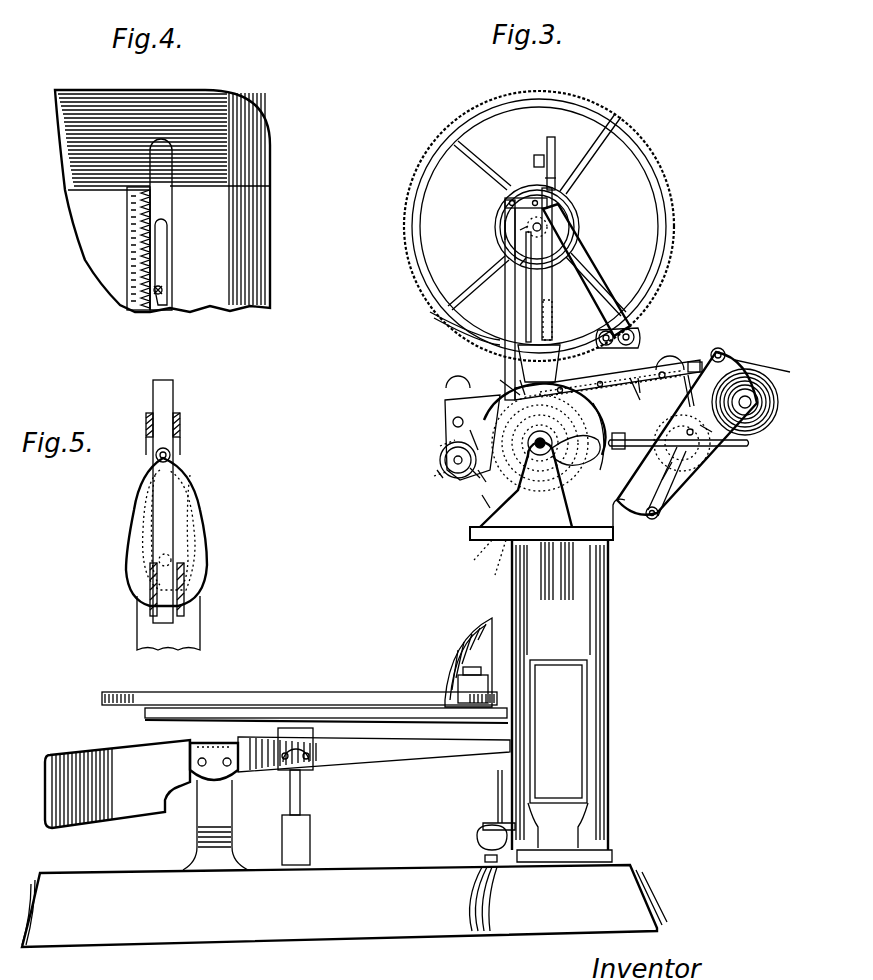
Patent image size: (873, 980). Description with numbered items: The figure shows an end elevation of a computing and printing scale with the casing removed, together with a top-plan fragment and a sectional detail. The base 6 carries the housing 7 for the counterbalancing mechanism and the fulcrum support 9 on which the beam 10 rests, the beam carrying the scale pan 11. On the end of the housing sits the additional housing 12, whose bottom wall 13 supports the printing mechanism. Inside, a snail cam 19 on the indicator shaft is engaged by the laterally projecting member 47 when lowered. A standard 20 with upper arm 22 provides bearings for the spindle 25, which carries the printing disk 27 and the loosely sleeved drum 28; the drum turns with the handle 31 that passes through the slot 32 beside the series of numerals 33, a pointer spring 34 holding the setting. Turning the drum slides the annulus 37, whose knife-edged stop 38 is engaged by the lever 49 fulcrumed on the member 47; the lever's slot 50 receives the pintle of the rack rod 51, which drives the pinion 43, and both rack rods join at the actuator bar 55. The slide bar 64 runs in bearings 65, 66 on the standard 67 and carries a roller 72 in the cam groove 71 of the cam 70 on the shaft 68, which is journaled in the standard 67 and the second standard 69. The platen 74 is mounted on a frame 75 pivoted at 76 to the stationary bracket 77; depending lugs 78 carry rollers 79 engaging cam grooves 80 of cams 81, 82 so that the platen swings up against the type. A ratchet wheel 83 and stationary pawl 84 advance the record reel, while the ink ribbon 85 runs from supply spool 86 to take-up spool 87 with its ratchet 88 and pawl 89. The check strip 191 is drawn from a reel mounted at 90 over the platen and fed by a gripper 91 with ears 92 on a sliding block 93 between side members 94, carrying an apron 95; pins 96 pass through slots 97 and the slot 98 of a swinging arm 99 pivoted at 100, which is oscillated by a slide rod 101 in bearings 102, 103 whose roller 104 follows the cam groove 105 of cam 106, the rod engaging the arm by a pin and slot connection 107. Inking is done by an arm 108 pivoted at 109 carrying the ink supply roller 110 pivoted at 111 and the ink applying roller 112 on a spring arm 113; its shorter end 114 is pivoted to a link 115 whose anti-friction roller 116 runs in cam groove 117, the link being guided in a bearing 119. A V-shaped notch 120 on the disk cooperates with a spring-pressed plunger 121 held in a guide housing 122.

In FIG. 3, the base 6 is at (388, 940).
In FIG. 3, the housing 7 is at (612, 758).
In FIG. 3, the fulcrum support 9 is at (236, 842).
In FIG. 3, the beam 10 is at (405, 760).
In FIG. 3, the scale pan 11 is at (326, 691).
In FIG. 4, the additional housing 12 is at (208, 92).
In FIG. 3, the additional housing 12 is at (612, 120).
In FIG. 3, the floor or bottom wall 13 is at (576, 571).
In FIG. 3, the snail cam 19 is at (506, 192).
In FIG. 3, the standard 20 is at (506, 360).
In FIG. 3, the upper end of standard 22 is at (526, 274).
In FIG. 3, the spindle 25 is at (527, 228).
In FIG. 3, the printing disk 27 is at (664, 220).
In FIG. 3, the drum 28 is at (582, 210).
In FIG. 4, the handle 31 is at (166, 236).
In FIG. 4, the slot 32 is at (172, 176).
In FIG. 4, the series of numerals 33 is at (126, 215).
In FIG. 4, the pointer spring 34 is at (150, 292).
In FIG. 3, the annulus 37 is at (585, 236).
In FIG. 3, the knife-edged stop or anvil 38 is at (560, 196).
In FIG. 3, the pinion 43 is at (503, 229).
In FIG. 3, the laterally projecting member 47 is at (538, 155).
In FIG. 3, the lever 49 is at (556, 152).
In FIG. 3, the slot 50 is at (556, 178).
In FIG. 3, the rack rod 51 is at (553, 288).
In FIG. 3, the actuator bar 55 is at (543, 316).
In FIG. 5, the slide bar 64 is at (162, 496).
In FIG. 5, the bearing 65 is at (182, 418).
In FIG. 5, the bearing 66 is at (150, 606).
In FIG. 5, the standard 67 is at (201, 628).
In FIG. 3, the shaft 68 is at (610, 430).
In FIG. 3, the second standard 69 is at (500, 514).
In FIG. 5, the cam 70 is at (204, 526).
In FIG. 5, the cam groove 71 is at (193, 550).
In FIG. 5, the roller 72 is at (170, 460).
In FIG. 3, the platen 74 is at (592, 376).
In FIG. 3, the frame 75 is at (706, 370).
In FIG. 3, the pivot 76 is at (724, 351).
In FIG. 3, the stationary bracket 77 is at (626, 502).
In FIG. 3, the depending lugs 78 is at (521, 384).
In FIG. 3, the rollers 79 is at (478, 476).
In FIG. 3, the cam grooves 80 is at (484, 502).
In FIG. 3, the cam 81 is at (446, 390).
In FIG. 3, the cam 82 is at (512, 492).
In FIG. 3, the ratchet wheel 83 is at (452, 476).
In FIG. 3, the stationary pawl 84 is at (470, 480).
In FIG. 3, the ink ribbon 85 is at (448, 403).
In FIG. 3, the supply spool 86 is at (604, 378).
In FIG. 3, the take-up spool 87 is at (440, 440).
In FIG. 3, the ratchet 88 is at (453, 422).
In FIG. 3, the stationary pawl 89 is at (454, 460).
In FIG. 3, the check strip reel mounting 90 is at (770, 420).
In FIG. 3, the toothed pawl or gripper 91 is at (664, 372).
In FIG. 3, the downwardly bent ears 92 is at (690, 366).
In FIG. 3, the sliding block 93 is at (707, 421).
In FIG. 3, the side members 94 is at (642, 400).
In FIG. 3, the apron 95 is at (689, 390).
In FIG. 3, the pins 96 is at (698, 362).
In FIG. 3, the slots 97 is at (641, 392).
In FIG. 3, the slot 98 is at (691, 423).
In FIG. 3, the swinging arm 99 is at (664, 506).
In FIG. 3, the pivot 100 is at (660, 516).
In FIG. 3, the slide rod 101 is at (747, 444).
In FIG. 3, the bearing 102 is at (620, 449).
In FIG. 3, the bearing 103 is at (700, 450).
In FIG. 3, the roller 104 is at (575, 470).
In FIG. 3, the cam groove 105 is at (576, 495).
In FIG. 3, the cam 106 is at (598, 470).
In FIG. 3, the pin and slot connection 107 is at (680, 484).
In FIG. 3, the arm 108 is at (595, 264).
In FIG. 3, the pivot 109 is at (530, 195).
In FIG. 3, the ink supply roller 110 is at (632, 330).
In FIG. 3, the pivot 111 is at (636, 338).
In FIG. 3, the ink applying roller 112 is at (595, 342).
In FIG. 3, the spring arm 113 is at (642, 346).
In FIG. 3, the shorter end 114 is at (506, 203).
In FIG. 3, the link 115 is at (521, 262).
In FIG. 3, the anti-friction roller 116 is at (500, 382).
In FIG. 3, the cam groove 117 is at (437, 470).
In FIG. 3, the bearing 119 is at (478, 338).
In FIG. 3, the V-shaped notch 120 is at (482, 550).
In FIG. 3, the spring-pressed plunger 121 is at (490, 559).
In FIG. 3, the guide housing 122 is at (556, 571).
In FIG. 3, the check strip 191 is at (748, 363).